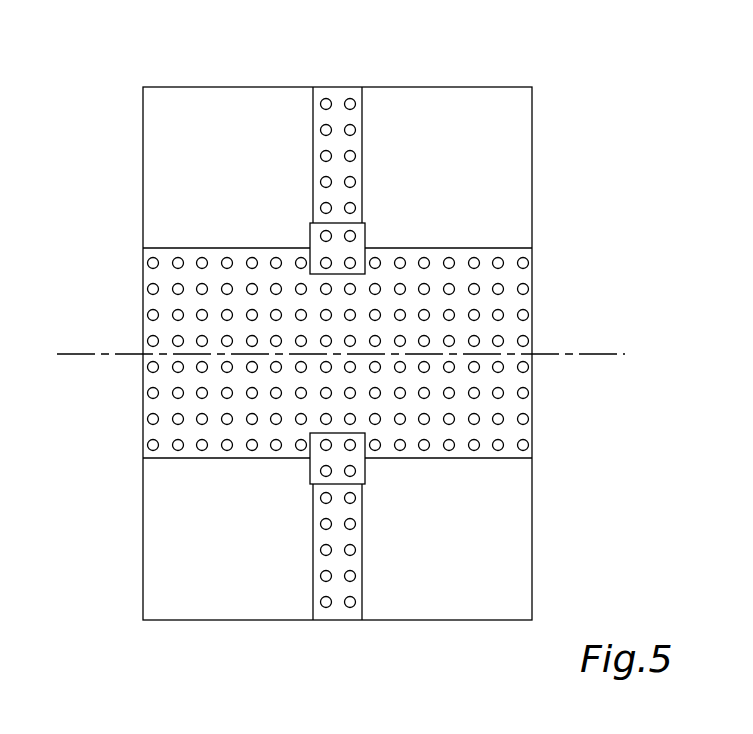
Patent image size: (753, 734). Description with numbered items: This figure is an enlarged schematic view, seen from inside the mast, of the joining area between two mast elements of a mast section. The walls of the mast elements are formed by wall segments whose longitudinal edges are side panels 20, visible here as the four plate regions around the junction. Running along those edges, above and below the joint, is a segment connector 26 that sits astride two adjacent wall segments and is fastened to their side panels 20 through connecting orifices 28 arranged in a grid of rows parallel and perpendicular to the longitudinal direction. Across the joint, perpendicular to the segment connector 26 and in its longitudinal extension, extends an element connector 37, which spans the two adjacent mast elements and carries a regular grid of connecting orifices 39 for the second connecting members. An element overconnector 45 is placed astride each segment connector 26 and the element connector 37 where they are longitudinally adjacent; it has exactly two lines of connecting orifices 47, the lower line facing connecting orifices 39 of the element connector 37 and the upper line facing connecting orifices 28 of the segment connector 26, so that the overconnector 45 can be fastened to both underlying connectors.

The side panel 20 is at (337, 353).
The segment connector 26 is at (323, 145).
The connecting orifice 28 is at (350, 100).
The element connector 37 is at (150, 328).
The connecting orifice 39 is at (147, 264).
The element overconnector 45 is at (311, 243).
The connecting orifice 47 is at (321, 236).